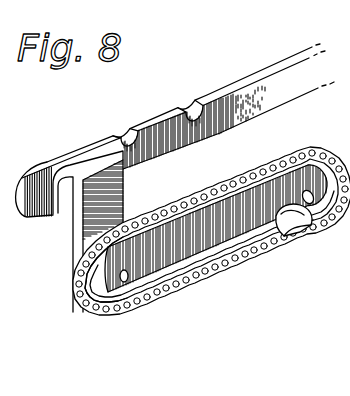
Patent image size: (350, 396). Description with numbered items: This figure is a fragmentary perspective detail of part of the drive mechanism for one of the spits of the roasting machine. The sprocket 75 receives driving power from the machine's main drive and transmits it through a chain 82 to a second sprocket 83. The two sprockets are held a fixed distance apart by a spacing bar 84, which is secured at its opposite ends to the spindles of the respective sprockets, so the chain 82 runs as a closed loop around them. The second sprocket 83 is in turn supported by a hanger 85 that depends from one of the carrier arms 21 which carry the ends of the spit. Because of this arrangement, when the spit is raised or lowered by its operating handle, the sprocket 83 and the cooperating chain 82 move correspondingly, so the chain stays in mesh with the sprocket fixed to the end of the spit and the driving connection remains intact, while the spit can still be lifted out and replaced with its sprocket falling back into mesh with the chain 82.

The carrier arm 21 is at (45, 162).
The hanger 85 is at (80, 232).
The chain 82 is at (207, 270).
The spacing bar 84 is at (226, 231).
The second sprocket 83 is at (102, 301).
The sprocket 75 is at (276, 212).